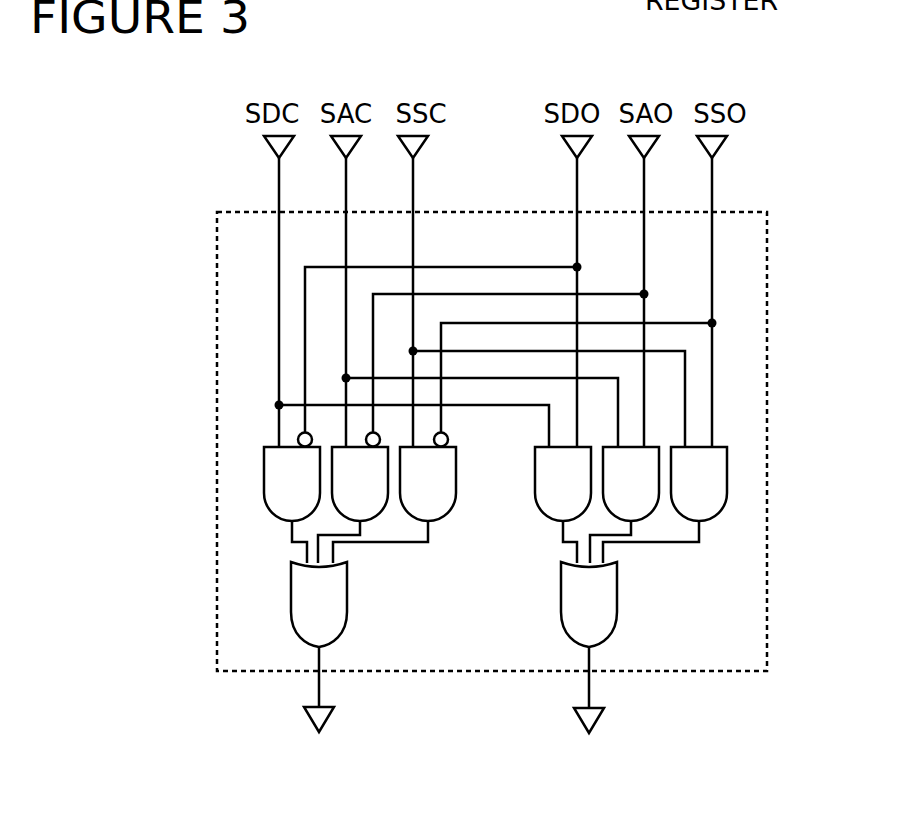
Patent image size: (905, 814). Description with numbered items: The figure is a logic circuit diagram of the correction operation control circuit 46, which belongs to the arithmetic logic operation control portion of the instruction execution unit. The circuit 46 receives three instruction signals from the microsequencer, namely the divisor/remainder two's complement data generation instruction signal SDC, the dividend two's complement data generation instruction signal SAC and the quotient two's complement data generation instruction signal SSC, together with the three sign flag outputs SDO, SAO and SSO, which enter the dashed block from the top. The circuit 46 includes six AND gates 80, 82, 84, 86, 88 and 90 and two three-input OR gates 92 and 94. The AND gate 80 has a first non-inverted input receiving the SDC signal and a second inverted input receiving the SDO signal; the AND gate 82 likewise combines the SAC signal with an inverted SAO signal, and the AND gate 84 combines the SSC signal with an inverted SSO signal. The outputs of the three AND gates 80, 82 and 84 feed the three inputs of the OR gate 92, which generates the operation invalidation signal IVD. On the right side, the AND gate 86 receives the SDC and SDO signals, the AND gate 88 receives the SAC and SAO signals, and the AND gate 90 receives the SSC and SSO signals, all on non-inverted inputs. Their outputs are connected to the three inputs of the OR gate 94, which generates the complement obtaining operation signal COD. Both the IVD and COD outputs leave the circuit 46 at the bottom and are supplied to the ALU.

The correction operation control circuit 46 is at (767, 275).
The AND gate 80 is at (277, 522).
The AND gate 82 is at (373, 521).
The AND gate 84 is at (457, 497).
The AND gate 86 is at (545, 525).
The AND gate 88 is at (650, 523).
The AND gate 90 is at (727, 503).
The three-input OR gate 92 is at (347, 612).
The three-input OR gate 94 is at (617, 600).